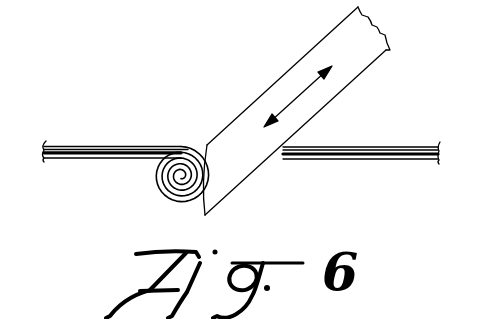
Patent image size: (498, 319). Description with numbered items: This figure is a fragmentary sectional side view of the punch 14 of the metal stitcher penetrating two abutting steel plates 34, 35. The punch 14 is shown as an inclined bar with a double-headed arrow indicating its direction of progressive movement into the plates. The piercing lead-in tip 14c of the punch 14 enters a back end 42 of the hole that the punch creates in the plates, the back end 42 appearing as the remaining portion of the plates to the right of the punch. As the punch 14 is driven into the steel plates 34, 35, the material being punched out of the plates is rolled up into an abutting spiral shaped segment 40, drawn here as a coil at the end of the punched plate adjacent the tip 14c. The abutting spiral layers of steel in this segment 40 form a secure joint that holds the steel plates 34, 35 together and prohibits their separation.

The punch 14 is at (294, 65).
The piercing lead-in tip 14c is at (206, 215).
The steel plate 34 is at (88, 146).
The steel plate 35 is at (85, 159).
The spiral shaped segment 40 is at (167, 196).
The back end of hole 42 is at (283, 160).